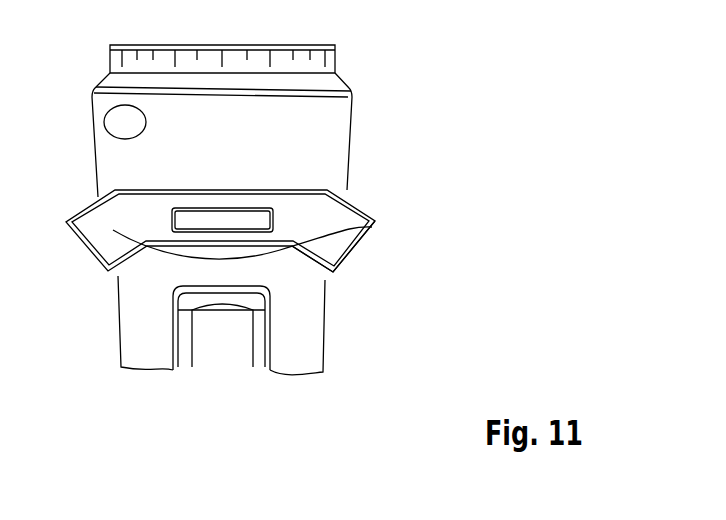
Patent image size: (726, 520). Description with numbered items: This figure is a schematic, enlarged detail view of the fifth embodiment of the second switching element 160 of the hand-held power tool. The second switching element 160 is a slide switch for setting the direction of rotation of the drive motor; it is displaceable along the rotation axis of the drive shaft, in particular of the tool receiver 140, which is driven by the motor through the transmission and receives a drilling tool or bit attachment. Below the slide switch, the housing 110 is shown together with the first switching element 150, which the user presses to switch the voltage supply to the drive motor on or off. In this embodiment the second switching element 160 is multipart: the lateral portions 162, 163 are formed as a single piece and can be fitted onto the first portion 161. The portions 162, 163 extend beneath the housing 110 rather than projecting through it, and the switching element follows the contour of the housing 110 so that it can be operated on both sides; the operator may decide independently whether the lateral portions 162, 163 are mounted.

The housing 110 is at (305, 343).
The tool receiver 140 is at (325, 62).
The first switching element 150 is at (225, 360).
The second switching element 160 is at (495, 203).
The first portion 161 is at (242, 218).
The lateral portion 162 is at (325, 250).
The lateral portion 163 is at (372, 227).